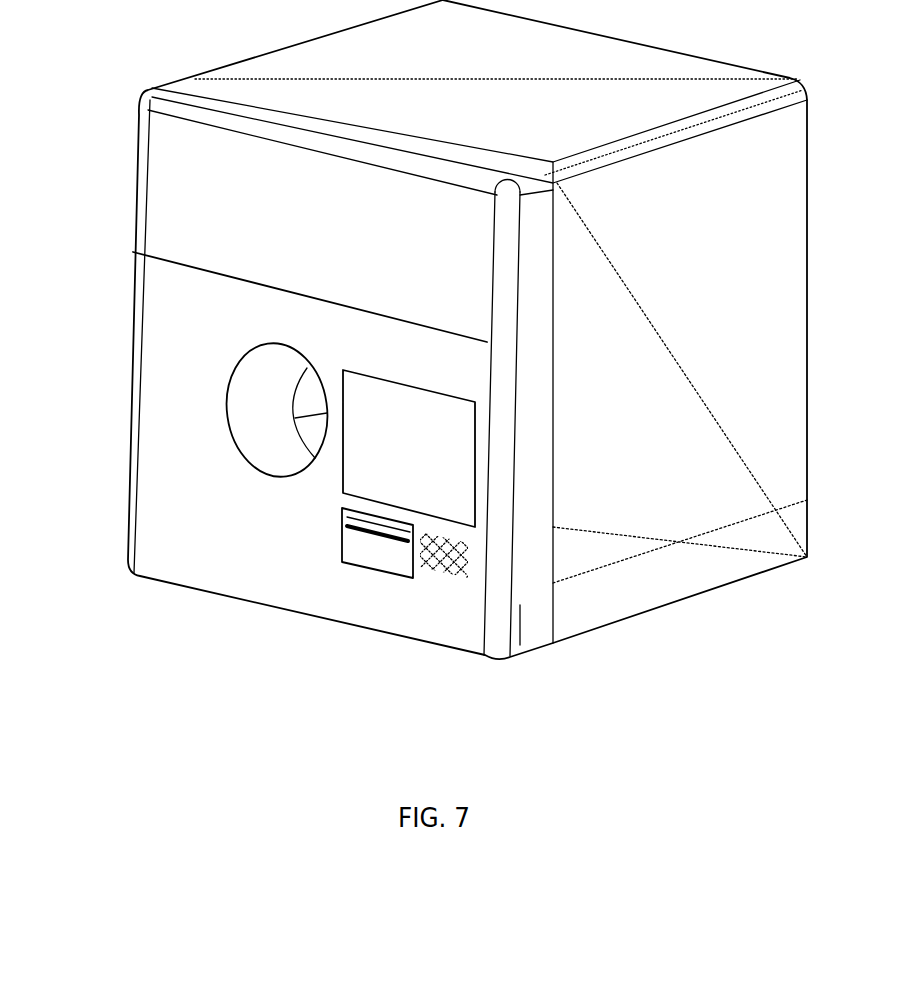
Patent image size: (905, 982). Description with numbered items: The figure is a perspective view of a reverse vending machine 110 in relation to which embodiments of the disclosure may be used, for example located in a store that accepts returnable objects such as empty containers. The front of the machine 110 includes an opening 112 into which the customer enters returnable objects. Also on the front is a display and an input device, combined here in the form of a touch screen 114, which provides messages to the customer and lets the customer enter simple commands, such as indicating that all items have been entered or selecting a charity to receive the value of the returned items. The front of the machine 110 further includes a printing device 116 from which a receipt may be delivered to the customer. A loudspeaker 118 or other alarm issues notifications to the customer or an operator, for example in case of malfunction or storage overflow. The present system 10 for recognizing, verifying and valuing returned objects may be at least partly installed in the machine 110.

The system 10 is at (335, 325).
The reverse vending machine 110 is at (282, 384).
The opening 112 is at (250, 347).
The touch screen 114 is at (440, 425).
The printing device 116 is at (362, 520).
The loudspeaker 118 is at (467, 570).